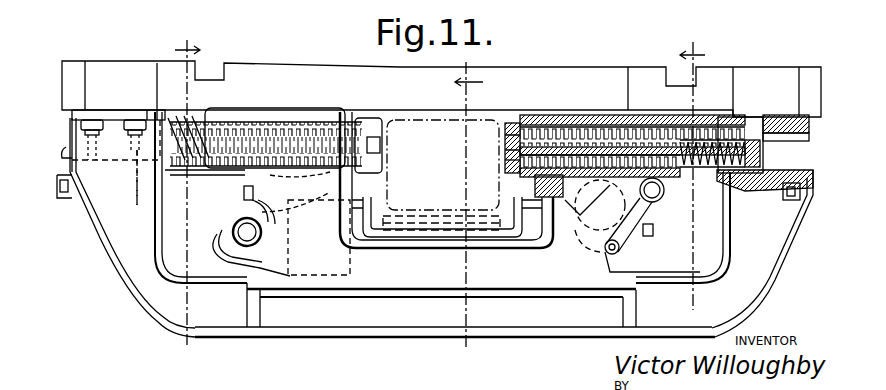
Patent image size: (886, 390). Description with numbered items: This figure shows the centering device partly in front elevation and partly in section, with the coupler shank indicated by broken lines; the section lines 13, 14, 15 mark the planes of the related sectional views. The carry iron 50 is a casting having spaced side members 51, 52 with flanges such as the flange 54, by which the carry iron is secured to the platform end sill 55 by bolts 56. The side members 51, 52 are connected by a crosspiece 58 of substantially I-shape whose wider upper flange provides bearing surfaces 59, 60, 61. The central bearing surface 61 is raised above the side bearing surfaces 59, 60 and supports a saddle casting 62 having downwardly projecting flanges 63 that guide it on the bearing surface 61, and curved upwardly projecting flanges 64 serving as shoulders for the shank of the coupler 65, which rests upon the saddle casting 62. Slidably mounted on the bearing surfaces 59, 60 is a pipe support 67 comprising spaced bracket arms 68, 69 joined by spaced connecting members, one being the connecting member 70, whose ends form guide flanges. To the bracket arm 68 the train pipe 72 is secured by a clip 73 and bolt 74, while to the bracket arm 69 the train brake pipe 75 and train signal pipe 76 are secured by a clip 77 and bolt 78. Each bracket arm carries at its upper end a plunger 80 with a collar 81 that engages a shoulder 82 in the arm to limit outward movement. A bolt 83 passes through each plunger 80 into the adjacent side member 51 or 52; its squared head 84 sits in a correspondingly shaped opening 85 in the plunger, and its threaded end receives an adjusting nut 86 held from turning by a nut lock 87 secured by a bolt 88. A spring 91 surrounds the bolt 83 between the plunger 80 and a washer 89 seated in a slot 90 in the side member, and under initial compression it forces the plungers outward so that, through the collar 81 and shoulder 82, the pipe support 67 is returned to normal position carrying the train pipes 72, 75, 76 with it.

The section line 13 is at (468, 215).
The section line 14 is at (695, 175).
The section line 15 is at (188, 201).
The carry iron 50 is at (345, 337).
The side member 51 is at (771, 245).
The side member 52 is at (110, 233).
The flange 54 is at (150, 109).
The platform end sill 55 is at (318, 78).
The bolts 56 is at (135, 120).
The crosspiece 58 is at (541, 325).
The bearing surface 59 is at (655, 276).
The bearing surface 60 is at (220, 270).
The bearing surface 61 is at (350, 228).
The saddle casting 62 is at (410, 240).
The downwardly projecting flanges 63 is at (483, 238).
The curved upwardly projecting flanges 64 is at (392, 204).
The coupler 65 is at (395, 161).
The pipe support 67 is at (415, 255).
The bracket arm 68 is at (296, 210).
The bracket arm 69 is at (600, 216).
The connecting member 70 is at (405, 291).
The train pipe 72 is at (236, 231).
The clip 73 is at (235, 218).
The bolt 74 is at (246, 200).
The train brake pipe 75 is at (664, 190).
The train signal pipe 76 is at (620, 250).
The clip 77 is at (650, 203).
The bolt 78 is at (653, 230).
The plunger 80 is at (370, 124).
The collar 81 is at (572, 228).
The shoulder 82 is at (538, 185).
The bolt 83 is at (578, 118).
The squared head 84 is at (505, 143).
The opening 85 is at (505, 158).
The adjusting nut 86 is at (752, 152).
The nut lock 87 is at (438, 161).
The bolt 88 is at (62, 200).
The washer 89 is at (468, 156).
The slot 90 is at (786, 116).
The spring 91 is at (690, 135).